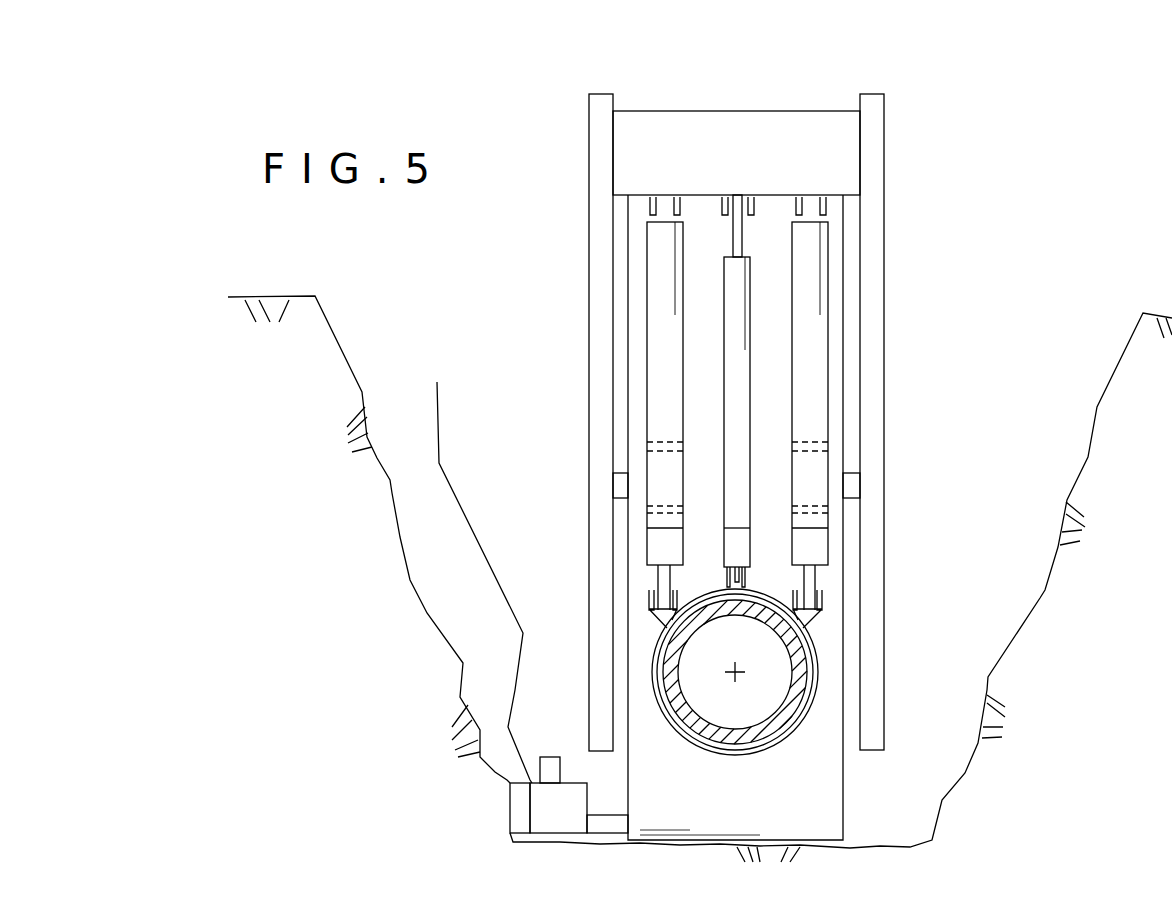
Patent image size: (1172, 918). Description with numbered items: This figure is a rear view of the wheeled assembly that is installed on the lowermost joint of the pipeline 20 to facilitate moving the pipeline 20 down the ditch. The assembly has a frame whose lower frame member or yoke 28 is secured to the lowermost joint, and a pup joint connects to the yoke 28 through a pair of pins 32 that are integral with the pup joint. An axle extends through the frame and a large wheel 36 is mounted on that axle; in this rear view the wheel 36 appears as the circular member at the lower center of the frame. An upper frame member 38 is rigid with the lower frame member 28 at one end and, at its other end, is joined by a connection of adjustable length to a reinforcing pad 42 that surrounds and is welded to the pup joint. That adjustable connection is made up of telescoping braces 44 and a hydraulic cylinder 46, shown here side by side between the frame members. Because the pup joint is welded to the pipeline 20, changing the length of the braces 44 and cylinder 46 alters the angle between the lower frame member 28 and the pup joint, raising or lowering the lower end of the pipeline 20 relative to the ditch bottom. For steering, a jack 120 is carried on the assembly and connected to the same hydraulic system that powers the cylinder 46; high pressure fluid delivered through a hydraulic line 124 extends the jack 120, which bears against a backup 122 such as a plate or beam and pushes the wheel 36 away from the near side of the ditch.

The pipeline 20 is at (747, 615).
The lower frame member or yoke 28 is at (763, 133).
The pins 32 is at (850, 470).
The wheel 36 is at (822, 822).
The upper frame member 38 is at (592, 209).
The reinforcing pad 42 is at (700, 746).
The telescoping braces 44 is at (658, 315).
The hydraulic cylinder 46 is at (758, 391).
The jack 120 is at (568, 790).
The backup 122 is at (513, 815).
The hydraulic line 124 is at (467, 518).